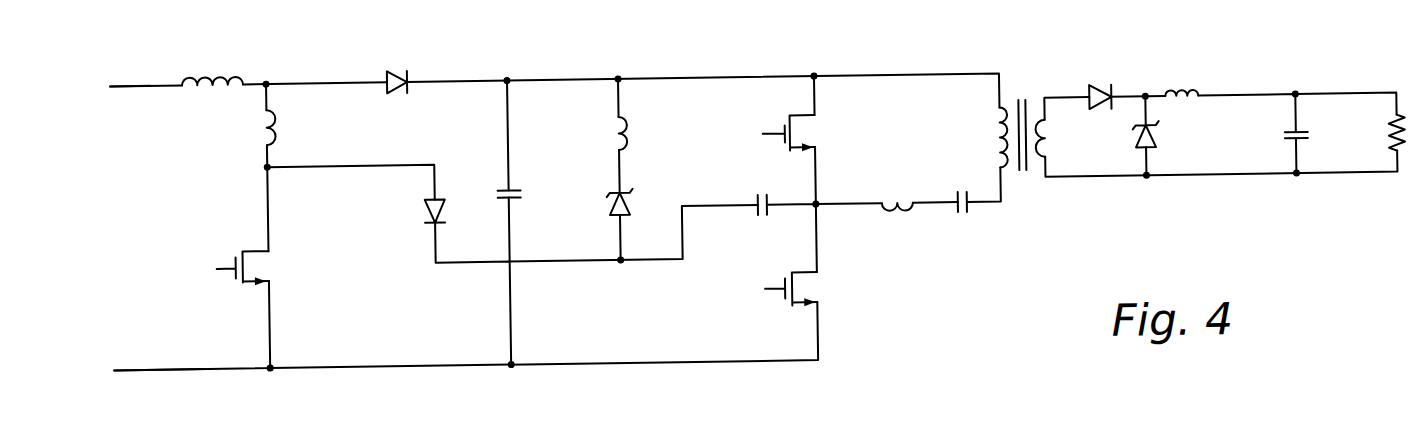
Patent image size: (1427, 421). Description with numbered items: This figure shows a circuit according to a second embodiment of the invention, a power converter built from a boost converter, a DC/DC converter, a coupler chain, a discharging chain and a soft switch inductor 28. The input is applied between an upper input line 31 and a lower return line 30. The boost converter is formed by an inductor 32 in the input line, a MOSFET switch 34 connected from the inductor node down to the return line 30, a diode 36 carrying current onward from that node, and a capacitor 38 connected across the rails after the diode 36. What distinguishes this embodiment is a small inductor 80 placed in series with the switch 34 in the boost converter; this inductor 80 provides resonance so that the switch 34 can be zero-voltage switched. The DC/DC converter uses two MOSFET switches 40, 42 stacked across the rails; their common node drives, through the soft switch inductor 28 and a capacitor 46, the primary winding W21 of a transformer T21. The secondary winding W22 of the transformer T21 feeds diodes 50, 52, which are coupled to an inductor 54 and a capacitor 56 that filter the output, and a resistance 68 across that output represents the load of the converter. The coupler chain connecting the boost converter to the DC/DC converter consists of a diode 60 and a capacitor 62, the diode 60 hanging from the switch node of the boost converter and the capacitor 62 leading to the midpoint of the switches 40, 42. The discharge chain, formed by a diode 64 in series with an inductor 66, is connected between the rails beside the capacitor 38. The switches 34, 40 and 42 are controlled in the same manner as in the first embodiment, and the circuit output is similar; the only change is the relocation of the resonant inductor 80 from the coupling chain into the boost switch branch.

The soft switch inductor 28 is at (898, 212).
The return line 30 is at (173, 364).
The input line 31 is at (149, 80).
The inductor 32 is at (216, 66).
The MOSFET switch 34 is at (268, 261).
The diode 36 is at (398, 68).
The capacitor 38 is at (511, 198).
The MOSFET switch 40 is at (818, 292).
The MOSFET switch 42 is at (806, 135).
The capacitor 46 is at (956, 222).
The diode 50 is at (1102, 91).
The diode 52 is at (1152, 135).
The inductor 54 is at (1190, 94).
The capacitor 56 is at (1289, 132).
The diode 60 is at (422, 215).
The capacitor 62 is at (756, 218).
The diode 64 is at (629, 205).
The inductor 66 is at (616, 136).
The resistance 68 is at (1390, 143).
The small inductor 80 is at (262, 128).
The transformer T21 is at (1022, 96).
The primary winding W21 is at (999, 148).
The secondary winding W22 is at (1046, 134).